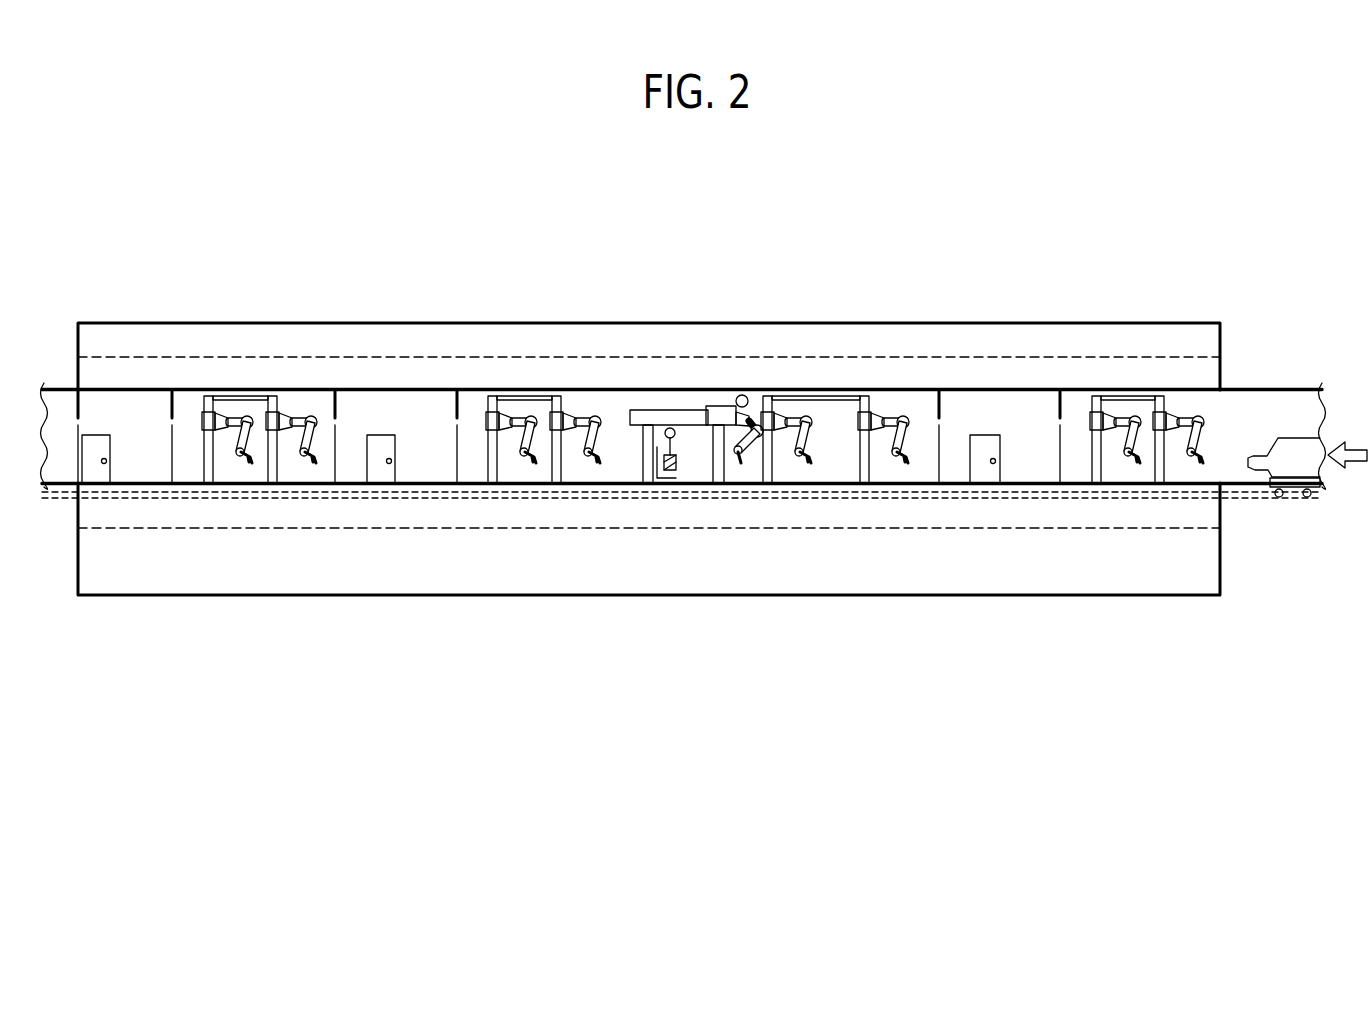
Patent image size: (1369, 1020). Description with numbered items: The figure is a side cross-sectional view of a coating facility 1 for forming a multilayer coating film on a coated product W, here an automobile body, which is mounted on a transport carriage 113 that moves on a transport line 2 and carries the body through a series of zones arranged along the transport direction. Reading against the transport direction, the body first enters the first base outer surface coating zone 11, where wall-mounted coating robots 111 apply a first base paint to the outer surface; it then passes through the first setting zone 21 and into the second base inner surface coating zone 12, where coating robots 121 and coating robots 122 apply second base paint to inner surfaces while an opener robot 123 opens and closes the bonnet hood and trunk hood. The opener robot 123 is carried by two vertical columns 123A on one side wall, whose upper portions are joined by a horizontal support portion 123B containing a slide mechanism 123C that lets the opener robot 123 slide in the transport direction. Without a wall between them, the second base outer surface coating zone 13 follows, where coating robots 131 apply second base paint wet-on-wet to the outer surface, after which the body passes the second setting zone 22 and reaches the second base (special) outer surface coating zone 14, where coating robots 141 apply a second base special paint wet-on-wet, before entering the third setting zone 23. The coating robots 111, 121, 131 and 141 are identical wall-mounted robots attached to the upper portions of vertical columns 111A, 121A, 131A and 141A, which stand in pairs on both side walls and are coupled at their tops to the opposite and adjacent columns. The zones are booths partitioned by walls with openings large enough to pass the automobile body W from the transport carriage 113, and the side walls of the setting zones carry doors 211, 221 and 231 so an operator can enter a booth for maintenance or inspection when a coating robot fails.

The coating facility 1 is at (1212, 193).
The transport line 2 is at (1243, 505).
The first base outer surface coating zone 11 is at (1197, 413).
The coating robot 111 is at (1180, 418).
The column 111A is at (1159, 483).
The transport carriage 113 is at (1290, 500).
The second base inner surface coating zone 12 is at (913, 415).
The coating robot 121 is at (884, 418).
The column 121A is at (864, 483).
The coating robot 122 is at (685, 410).
The opener robot 123 is at (760, 412).
The column 123A is at (722, 483).
The horizontal support portion 123B is at (700, 406).
The slide mechanism 123C is at (722, 400).
The second base outer surface coating zone 13 is at (602, 412).
The coating robot 131 is at (575, 418).
The column 131A is at (558, 483).
The second base (special) outer surface coating zone 14 is at (308, 412).
The coating robot 141 is at (292, 418).
The column 141A is at (277, 483).
The first setting zone 21 is at (1027, 418).
The door 211 is at (985, 478).
The second setting zone 22 is at (413, 412).
The door 221 is at (375, 478).
The third setting zone 23 is at (145, 413).
The door 231 is at (104, 478).
The coated product (automobile body) W is at (1298, 440).